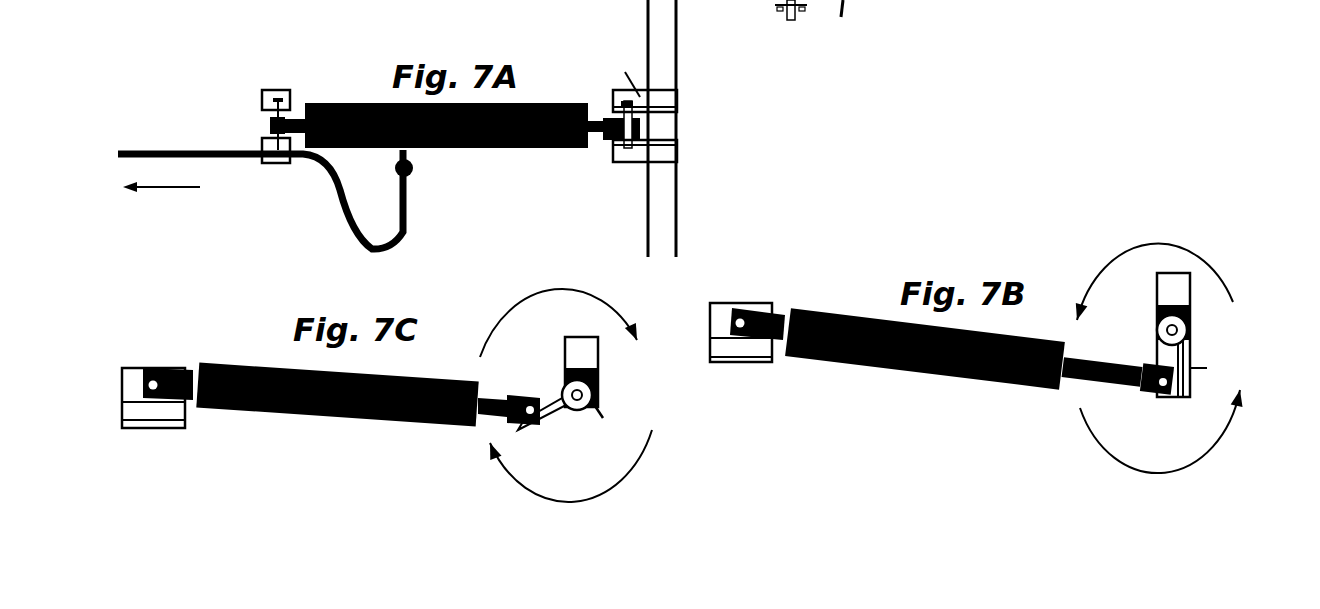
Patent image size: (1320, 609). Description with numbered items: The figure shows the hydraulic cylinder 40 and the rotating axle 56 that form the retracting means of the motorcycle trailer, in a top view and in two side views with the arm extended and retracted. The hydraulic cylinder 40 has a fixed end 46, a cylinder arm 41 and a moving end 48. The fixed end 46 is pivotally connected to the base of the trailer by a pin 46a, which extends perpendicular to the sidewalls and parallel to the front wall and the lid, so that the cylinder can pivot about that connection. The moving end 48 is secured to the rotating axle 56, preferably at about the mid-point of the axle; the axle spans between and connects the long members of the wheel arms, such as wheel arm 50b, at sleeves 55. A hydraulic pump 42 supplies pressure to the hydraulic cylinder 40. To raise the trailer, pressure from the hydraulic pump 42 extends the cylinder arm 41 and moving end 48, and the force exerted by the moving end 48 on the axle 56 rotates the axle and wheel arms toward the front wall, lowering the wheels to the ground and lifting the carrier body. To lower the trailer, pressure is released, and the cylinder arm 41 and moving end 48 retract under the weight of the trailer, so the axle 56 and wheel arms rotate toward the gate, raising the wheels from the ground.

In FIG. 7A, the hydraulic cylinder 40 is at (490, 152).
In FIG. 7C, the hydraulic cylinder 40 is at (300, 423).
In FIG. 7B, the hydraulic cylinder 40 is at (880, 375).
In FIG. 7A, the cylinder arm 41 is at (597, 138).
In FIG. 7C, the cylinder arm 41 is at (490, 423).
In FIG. 7B, the cylinder arm 41 is at (1107, 390).
In FIG. 7A, the hydraulic pump 42 is at (175, 188).
In FIG. 7A, the fixed end 46 is at (268, 127).
In FIG. 7C, the fixed end 46 is at (133, 380).
In FIG. 7B, the fixed end 46 is at (725, 322).
In FIG. 7A, the pin 46a is at (283, 100).
In FIG. 7C, the pin 46a is at (160, 370).
In FIG. 7B, the pin 46a is at (750, 310).
In FIG. 7A, the moving end 48 is at (645, 127).
In FIG. 7C, the moving end 48 is at (528, 430).
In FIG. 7B, the moving end 48 is at (1165, 397).
In FIG. 7A, the rotating axle 56 is at (660, 62).
In FIG. 7C, the rotating axle 56 is at (573, 392).
In FIG. 7B, the rotating axle 56 is at (1167, 330).
In FIG. 7A, the wheel arm 50b is at (849, 20).
In FIG. 7A, the sleeve 55 is at (858, 10).